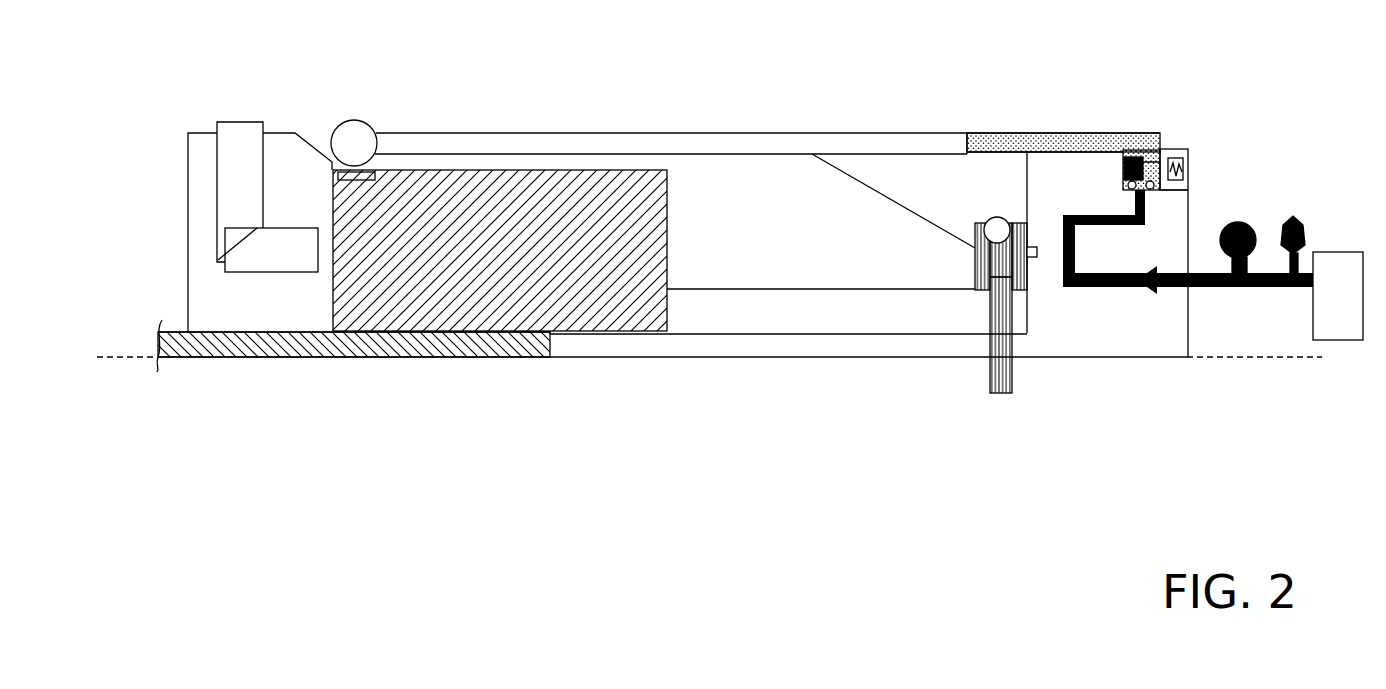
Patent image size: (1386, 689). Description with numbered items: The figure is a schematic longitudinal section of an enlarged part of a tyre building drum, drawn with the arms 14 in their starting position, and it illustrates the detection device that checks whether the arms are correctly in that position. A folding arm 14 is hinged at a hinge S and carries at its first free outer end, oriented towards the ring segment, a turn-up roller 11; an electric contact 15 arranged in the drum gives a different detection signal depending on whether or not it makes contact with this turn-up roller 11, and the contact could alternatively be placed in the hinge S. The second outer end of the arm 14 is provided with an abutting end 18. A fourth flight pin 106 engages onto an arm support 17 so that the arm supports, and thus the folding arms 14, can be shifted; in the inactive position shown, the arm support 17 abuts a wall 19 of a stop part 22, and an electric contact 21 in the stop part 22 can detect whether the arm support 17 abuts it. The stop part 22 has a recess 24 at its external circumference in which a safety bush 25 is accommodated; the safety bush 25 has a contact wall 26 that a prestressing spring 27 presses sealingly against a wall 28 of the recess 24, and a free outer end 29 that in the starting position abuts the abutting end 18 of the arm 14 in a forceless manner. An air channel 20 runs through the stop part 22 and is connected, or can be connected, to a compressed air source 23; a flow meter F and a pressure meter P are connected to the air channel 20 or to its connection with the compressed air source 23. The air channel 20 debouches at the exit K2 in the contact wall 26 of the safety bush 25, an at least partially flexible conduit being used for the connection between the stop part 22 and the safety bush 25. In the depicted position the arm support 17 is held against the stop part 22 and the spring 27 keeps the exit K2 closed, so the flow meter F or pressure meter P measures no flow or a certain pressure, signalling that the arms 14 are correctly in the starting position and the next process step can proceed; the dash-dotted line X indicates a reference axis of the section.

The turn-up roller 11 is at (355, 120).
The arm 14 is at (537, 133).
The electric contact 15 is at (338, 176).
The arm support 17 is at (975, 256).
The abutting end 18 is at (963, 143).
The wall 19 is at (1037, 257).
The air channel 20 is at (1113, 288).
The electric contact 21 is at (1027, 317).
The stop part 22 is at (1052, 193).
The compressed air source 23 is at (1335, 265).
The recess 24 is at (1180, 193).
The safety bush 25 is at (1118, 133).
The contact wall 26 is at (1125, 172).
The prestressing spring 27 is at (1188, 160).
The wall 28 is at (1122, 187).
The free outer end 29 is at (982, 133).
The fourth flight pin 106 is at (990, 382).
The hinge S is at (985, 267).
The reference plane X is at (112, 358).
The pressure meter P is at (1235, 222).
The flow meter F is at (1292, 218).
The exit K2 is at (1125, 162).